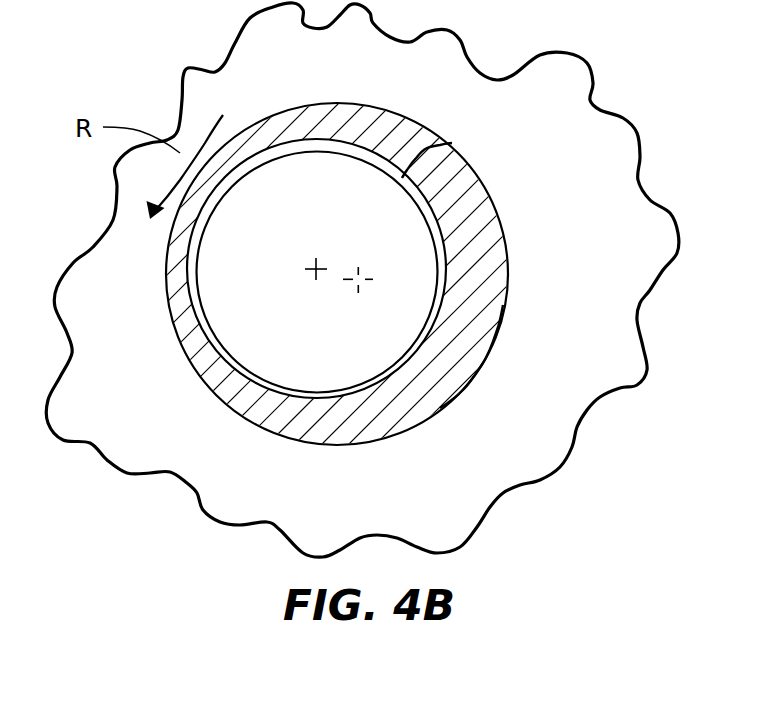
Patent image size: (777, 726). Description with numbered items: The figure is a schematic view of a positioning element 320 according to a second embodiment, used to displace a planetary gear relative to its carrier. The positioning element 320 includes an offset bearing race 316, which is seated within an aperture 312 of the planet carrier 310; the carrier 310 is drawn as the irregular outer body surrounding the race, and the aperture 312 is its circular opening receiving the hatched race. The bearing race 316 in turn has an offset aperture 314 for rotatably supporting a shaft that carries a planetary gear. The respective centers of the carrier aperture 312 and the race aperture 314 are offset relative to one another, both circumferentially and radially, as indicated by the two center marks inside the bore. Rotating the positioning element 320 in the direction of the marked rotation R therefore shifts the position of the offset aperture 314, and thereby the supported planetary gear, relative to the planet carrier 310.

The planet carrier 310 is at (123, 423).
The aperture 312 is at (233, 434).
The offset aperture 314 is at (337, 346).
The offset bearing race 316 is at (452, 143).
The positioning element 320 is at (475, 297).